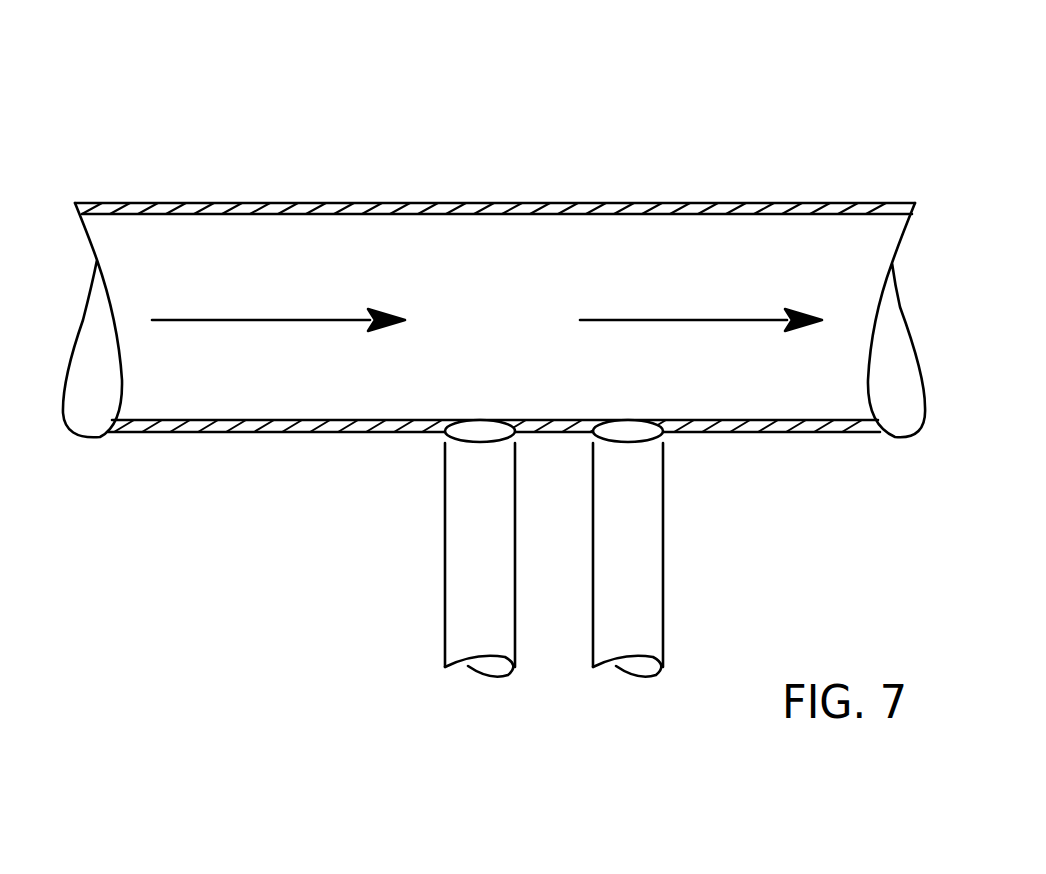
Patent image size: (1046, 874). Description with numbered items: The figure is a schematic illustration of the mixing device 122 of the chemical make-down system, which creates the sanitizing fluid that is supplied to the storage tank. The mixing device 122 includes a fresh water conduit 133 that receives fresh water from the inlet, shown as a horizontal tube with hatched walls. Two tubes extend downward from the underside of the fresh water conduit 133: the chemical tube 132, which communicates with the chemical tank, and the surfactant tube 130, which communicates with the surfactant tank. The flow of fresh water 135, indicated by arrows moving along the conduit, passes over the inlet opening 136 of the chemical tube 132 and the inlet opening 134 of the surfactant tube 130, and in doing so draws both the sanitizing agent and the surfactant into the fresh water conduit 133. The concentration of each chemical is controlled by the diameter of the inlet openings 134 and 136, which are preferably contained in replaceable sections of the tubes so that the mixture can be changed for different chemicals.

The mixing device 122 is at (494, 218).
The fresh water conduit 133 is at (205, 203).
The flow of fresh water 135 is at (290, 320).
The inlet opening 136 is at (479, 430).
The inlet opening 134 is at (630, 432).
The chemical tube 132 is at (445, 553).
The surfactant tube 130 is at (665, 543).